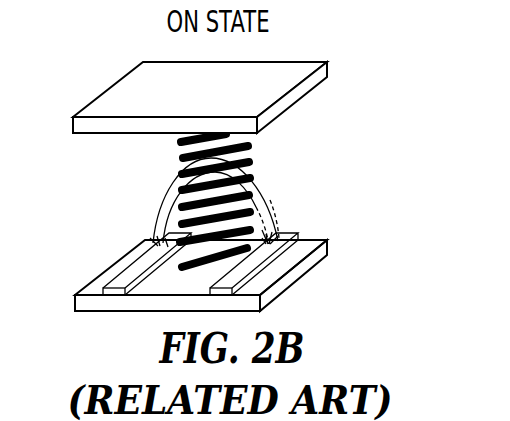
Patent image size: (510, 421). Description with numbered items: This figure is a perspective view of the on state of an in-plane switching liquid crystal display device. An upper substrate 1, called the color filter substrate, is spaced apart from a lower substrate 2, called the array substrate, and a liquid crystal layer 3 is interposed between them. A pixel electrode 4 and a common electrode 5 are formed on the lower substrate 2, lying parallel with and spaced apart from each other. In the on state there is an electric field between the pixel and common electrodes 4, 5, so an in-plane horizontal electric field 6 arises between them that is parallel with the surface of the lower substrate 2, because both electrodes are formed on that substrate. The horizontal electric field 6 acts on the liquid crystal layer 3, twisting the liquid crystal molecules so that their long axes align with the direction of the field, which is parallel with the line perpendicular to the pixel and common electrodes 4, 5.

The upper substrate 1 is at (328, 71).
The lower substrate 2 is at (329, 246).
The liquid crystal layer 3 is at (250, 162).
The pixel electrode 4 is at (132, 262).
The common electrode 5 is at (298, 228).
The horizontal electric field 6 is at (274, 229).